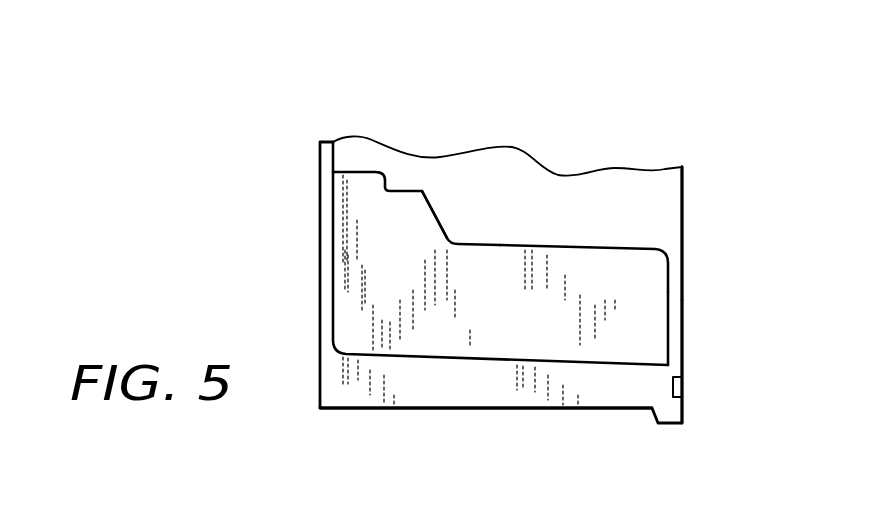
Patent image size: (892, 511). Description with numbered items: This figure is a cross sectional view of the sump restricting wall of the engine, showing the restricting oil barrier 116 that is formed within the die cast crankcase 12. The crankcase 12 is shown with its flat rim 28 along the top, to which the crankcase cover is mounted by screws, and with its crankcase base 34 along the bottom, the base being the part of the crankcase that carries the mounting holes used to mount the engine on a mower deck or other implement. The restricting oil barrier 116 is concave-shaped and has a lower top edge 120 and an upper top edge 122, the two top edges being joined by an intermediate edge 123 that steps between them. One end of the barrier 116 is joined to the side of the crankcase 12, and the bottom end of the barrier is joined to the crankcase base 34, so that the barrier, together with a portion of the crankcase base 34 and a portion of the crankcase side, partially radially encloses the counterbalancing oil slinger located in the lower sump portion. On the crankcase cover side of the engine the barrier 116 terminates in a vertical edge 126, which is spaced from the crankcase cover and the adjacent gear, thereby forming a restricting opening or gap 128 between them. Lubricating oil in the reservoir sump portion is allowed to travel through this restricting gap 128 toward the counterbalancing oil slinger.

The crankcase 12 is at (320, 251).
The flat rim 28 is at (682, 217).
The crankcase base 34 is at (474, 388).
The restricting oil barrier 116 is at (512, 225).
The lower top edge 120 is at (603, 250).
The upper top edge 122 is at (402, 190).
The intermediate edge 123 is at (446, 224).
The vertical edge 126 is at (668, 291).
The restricting gap 128 is at (673, 320).